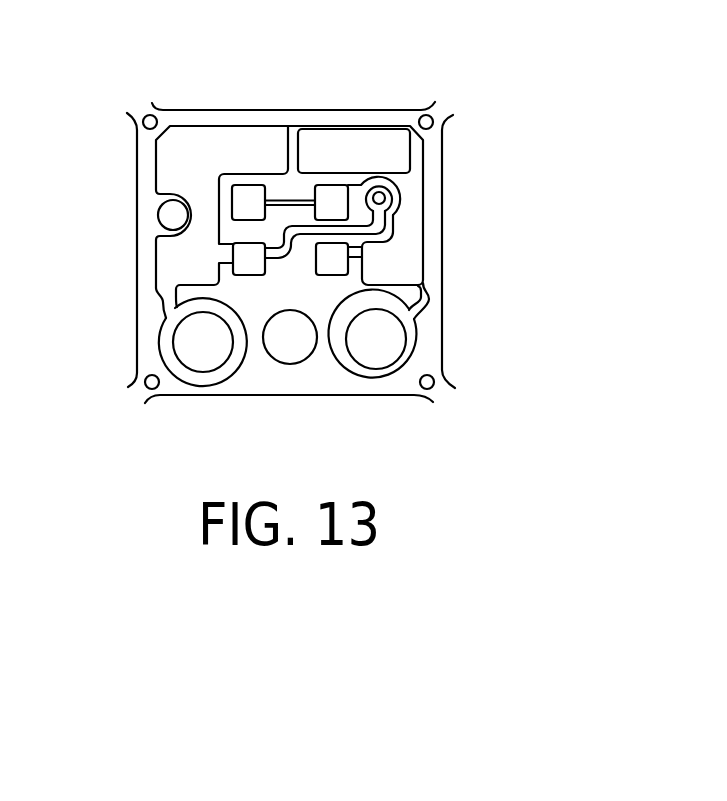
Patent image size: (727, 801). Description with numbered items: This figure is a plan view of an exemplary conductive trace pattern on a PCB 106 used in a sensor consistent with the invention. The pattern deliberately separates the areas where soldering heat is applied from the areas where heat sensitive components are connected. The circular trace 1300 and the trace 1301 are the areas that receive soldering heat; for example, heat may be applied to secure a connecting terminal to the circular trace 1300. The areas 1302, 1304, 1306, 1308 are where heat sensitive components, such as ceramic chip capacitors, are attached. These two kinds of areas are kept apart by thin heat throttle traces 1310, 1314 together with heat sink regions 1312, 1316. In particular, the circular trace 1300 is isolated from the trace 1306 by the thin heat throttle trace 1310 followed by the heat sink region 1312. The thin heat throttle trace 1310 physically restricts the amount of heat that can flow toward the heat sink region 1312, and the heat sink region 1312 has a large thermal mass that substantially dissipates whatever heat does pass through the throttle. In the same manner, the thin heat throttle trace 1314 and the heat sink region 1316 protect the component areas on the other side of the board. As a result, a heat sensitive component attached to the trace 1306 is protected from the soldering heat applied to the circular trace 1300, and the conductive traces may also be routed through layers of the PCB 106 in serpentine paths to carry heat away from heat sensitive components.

The PCB 106 is at (240, 108).
The circular trace 1300 is at (182, 380).
The trace 1301 is at (414, 348).
The trace area 1302 is at (267, 186).
The trace area 1304 is at (360, 187).
The trace 1306 is at (247, 277).
The trace area 1308 is at (330, 277).
The thin heat throttle trace 1310 is at (160, 293).
The heat sink region 1312 is at (155, 259).
The thin heat throttle trace 1314 is at (420, 288).
The heat sink region 1316 is at (424, 232).